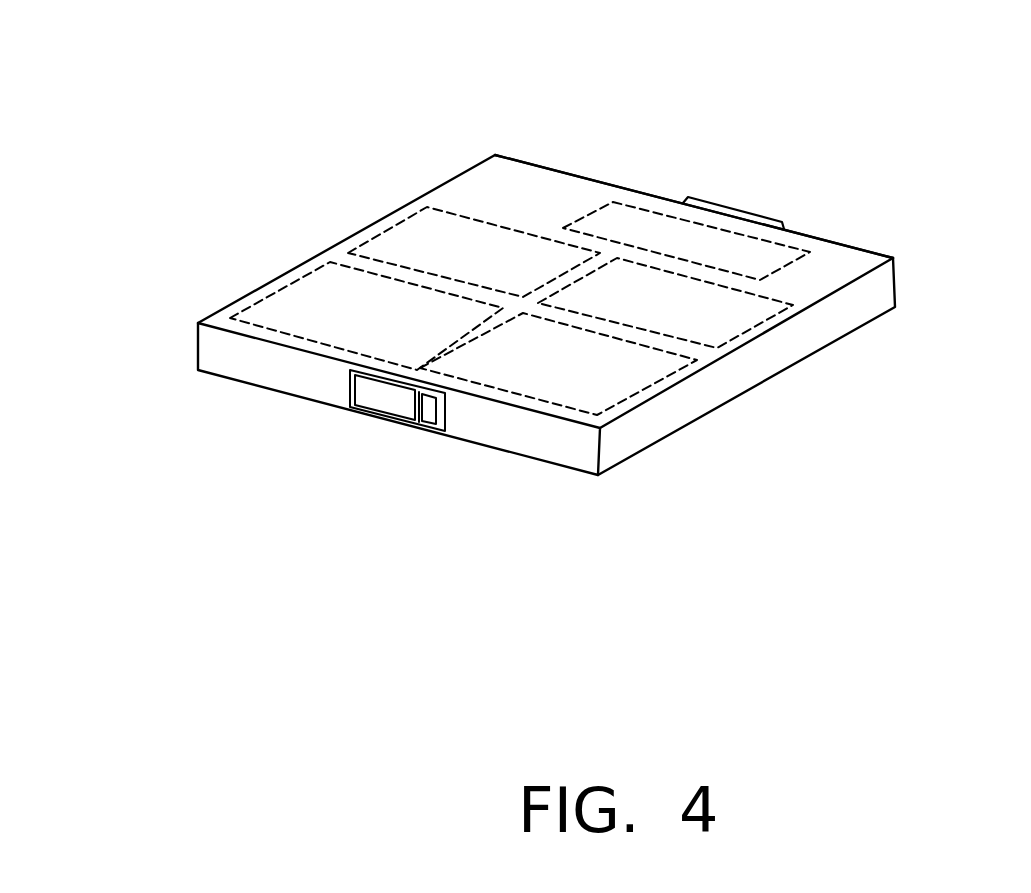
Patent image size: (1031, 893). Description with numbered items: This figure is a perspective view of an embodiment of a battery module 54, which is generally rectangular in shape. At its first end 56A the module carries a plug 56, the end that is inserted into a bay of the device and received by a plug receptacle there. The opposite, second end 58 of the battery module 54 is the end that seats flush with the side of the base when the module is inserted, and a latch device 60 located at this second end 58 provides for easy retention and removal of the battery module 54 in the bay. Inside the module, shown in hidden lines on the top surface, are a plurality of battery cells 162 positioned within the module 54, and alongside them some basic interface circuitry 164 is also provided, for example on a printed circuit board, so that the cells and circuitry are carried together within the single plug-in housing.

The battery module 54 is at (580, 261).
The plug 56 is at (710, 210).
The first end 56A is at (840, 243).
The second end 58 is at (260, 385).
The latch device 60 is at (395, 420).
The battery cells 162 is at (387, 222).
The interface circuitry 164 is at (628, 213).